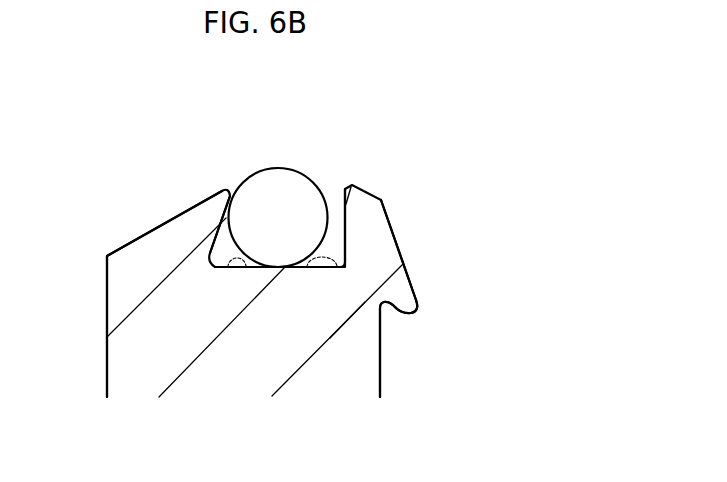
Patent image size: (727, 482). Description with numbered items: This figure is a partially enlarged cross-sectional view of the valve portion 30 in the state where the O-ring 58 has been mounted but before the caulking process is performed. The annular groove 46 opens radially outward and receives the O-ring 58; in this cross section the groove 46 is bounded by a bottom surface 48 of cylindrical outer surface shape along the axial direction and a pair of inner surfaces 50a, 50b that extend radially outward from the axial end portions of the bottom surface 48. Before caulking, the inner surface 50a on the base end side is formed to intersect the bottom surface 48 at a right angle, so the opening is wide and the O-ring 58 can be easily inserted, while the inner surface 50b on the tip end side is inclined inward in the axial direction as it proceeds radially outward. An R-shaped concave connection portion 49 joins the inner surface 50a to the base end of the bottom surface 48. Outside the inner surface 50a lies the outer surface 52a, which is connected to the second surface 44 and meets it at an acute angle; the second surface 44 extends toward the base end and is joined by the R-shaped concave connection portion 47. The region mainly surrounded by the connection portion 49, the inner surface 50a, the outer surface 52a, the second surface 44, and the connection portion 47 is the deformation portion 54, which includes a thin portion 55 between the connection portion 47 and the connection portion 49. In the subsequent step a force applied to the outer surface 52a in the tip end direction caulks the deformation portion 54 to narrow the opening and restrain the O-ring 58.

The valve portion 30 is at (150, 258).
The second surface 44 is at (394, 306).
The groove 46 is at (334, 170).
The connection portion 47 is at (382, 305).
The bottom surface 48 is at (225, 267).
The connection portion 49 is at (308, 268).
The inner surface 50a is at (333, 208).
The inner surface 50b is at (218, 238).
The outer surface 52a is at (388, 222).
The deformation portion 54 is at (385, 266).
The thin portion 55 is at (355, 291).
The O-ring 58 is at (282, 197).